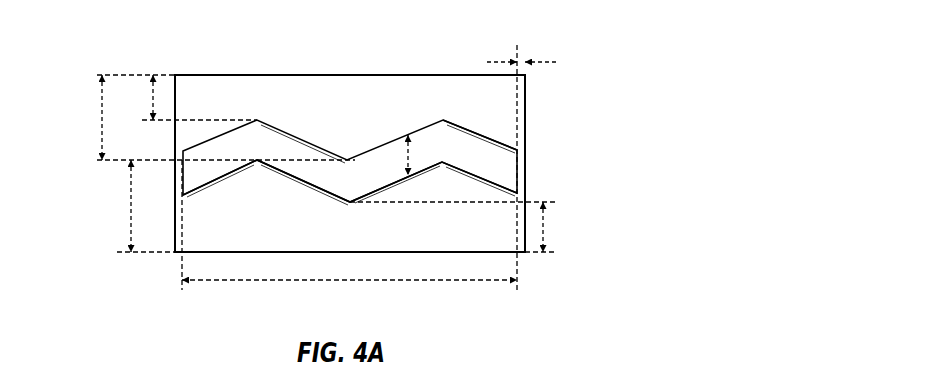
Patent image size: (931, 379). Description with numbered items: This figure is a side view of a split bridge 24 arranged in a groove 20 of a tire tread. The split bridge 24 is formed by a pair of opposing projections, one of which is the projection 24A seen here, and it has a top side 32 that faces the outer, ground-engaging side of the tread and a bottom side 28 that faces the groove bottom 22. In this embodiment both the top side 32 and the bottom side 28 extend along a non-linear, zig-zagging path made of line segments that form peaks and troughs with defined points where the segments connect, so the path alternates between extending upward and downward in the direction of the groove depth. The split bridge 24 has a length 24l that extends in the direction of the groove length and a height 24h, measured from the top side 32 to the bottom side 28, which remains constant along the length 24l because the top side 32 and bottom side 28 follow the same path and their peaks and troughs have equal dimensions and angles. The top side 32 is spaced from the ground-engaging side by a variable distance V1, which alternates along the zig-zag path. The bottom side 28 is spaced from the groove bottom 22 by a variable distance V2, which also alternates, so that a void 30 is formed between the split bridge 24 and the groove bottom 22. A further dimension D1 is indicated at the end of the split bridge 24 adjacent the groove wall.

The groove 20 is at (324, 92).
The groove bottom 22 is at (380, 251).
The split bridge 24 is at (503, 142).
The projection 24A is at (466, 129).
The bottom side 28 is at (303, 178).
The void 30 is at (205, 224).
The top side 32 is at (293, 134).
The variable distance V1 is at (101, 121).
The variable distance V2 is at (130, 218).
The edge offset dimension D1 is at (545, 62).
The height 24h is at (405, 146).
The length 24l is at (348, 282).